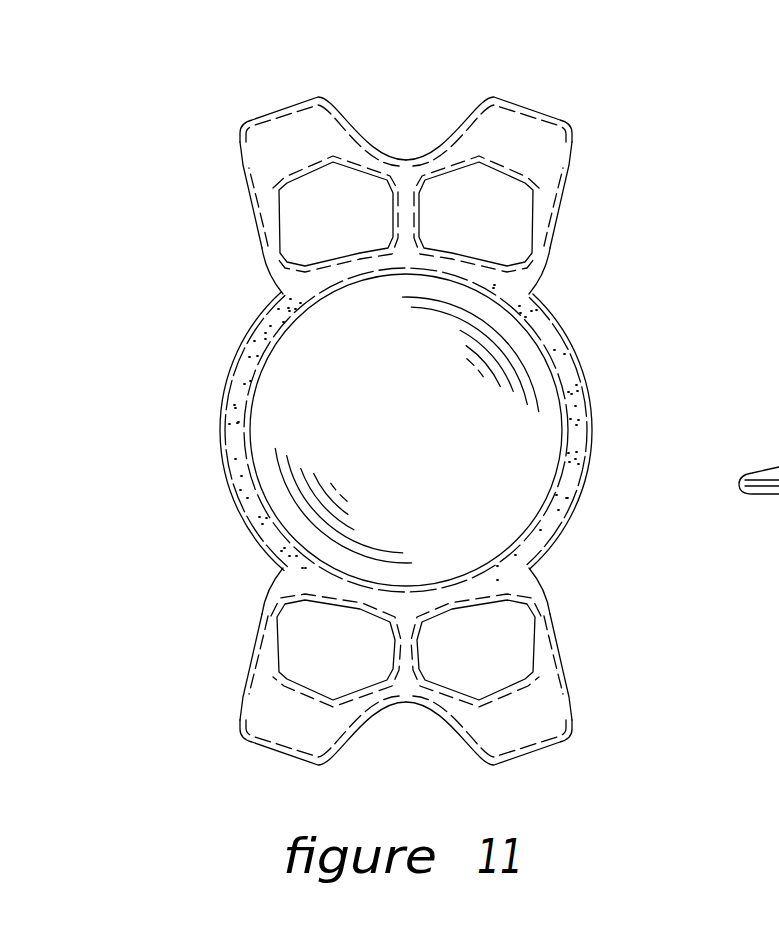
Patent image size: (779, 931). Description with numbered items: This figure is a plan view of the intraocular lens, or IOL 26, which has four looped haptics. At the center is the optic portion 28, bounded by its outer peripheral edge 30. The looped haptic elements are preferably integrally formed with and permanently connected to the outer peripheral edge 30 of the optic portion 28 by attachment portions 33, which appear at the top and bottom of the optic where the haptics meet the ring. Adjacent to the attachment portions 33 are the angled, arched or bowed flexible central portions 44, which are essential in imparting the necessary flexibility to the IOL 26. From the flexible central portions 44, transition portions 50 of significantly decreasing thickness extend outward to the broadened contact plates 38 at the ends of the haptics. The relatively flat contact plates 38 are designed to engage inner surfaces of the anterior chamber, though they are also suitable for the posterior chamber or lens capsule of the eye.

The IOL 26 is at (595, 355).
The optic portion 28 is at (427, 447).
The outer peripheral edge 30 is at (245, 345).
The attachment portions 33 is at (283, 296).
The contact plate 38 is at (288, 135).
The flexible central portions 44 is at (415, 217).
The transition portions 50 is at (255, 202).